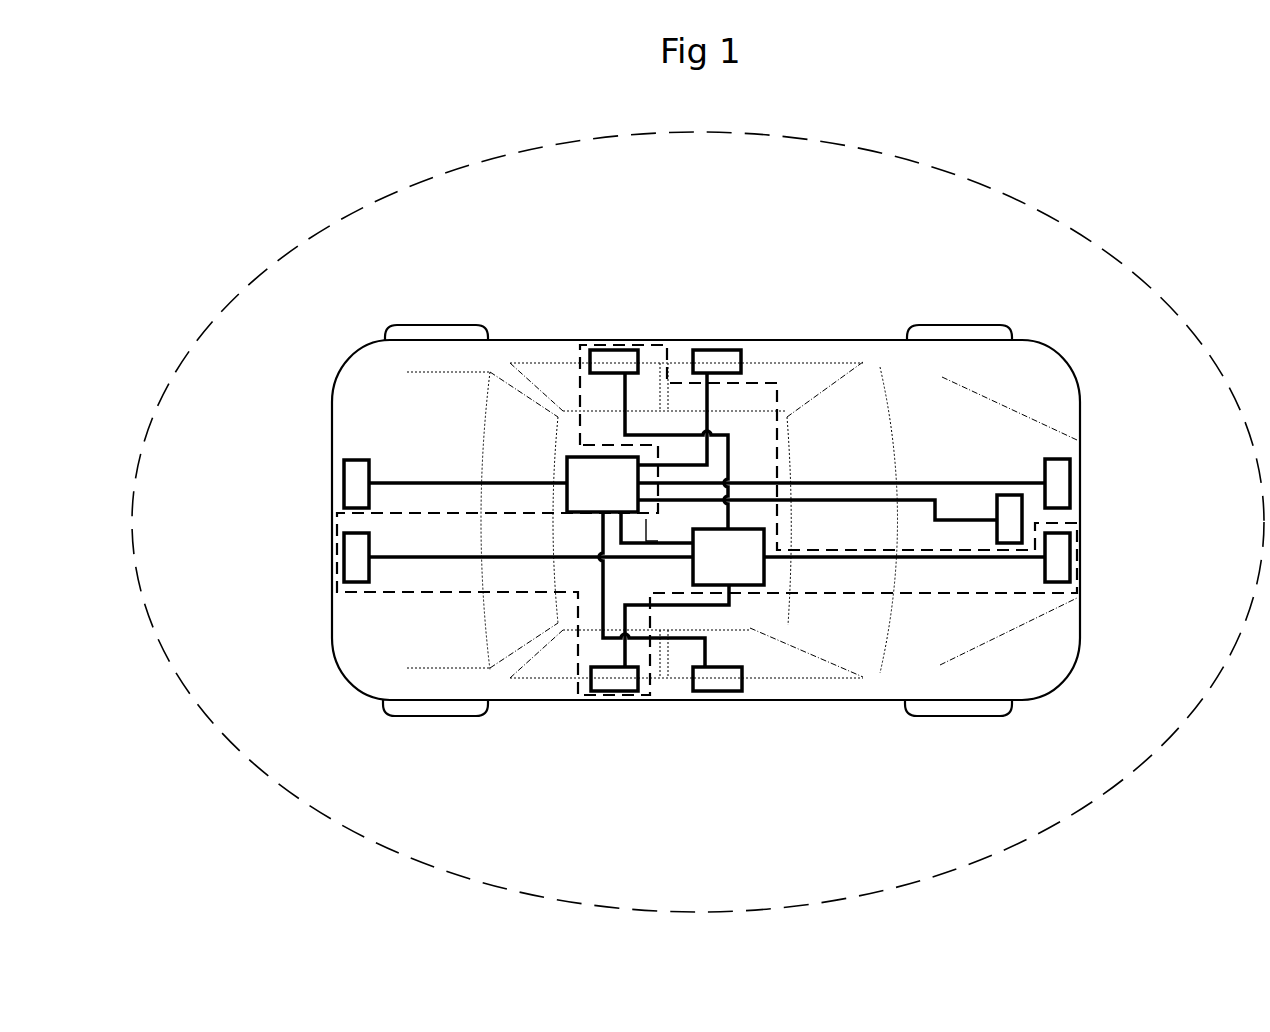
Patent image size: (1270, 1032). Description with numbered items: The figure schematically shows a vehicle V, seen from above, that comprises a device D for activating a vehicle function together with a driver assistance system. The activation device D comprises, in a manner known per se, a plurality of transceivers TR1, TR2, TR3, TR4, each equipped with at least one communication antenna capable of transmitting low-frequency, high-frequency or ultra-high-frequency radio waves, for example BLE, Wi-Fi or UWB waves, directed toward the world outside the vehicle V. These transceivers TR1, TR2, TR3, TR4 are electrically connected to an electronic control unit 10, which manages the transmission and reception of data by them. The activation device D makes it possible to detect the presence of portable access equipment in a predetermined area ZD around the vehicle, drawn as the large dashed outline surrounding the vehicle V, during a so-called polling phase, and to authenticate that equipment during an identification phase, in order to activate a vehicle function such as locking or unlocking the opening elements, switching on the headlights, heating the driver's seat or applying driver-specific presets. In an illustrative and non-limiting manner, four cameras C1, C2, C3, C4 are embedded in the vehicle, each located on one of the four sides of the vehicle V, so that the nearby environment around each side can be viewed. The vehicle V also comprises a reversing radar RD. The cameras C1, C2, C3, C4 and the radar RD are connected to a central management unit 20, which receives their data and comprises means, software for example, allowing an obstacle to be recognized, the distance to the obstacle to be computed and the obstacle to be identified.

The electronic control unit 10 is at (750, 570).
The central management unit 20 is at (597, 472).
The camera C1 is at (715, 683).
The camera C2 is at (714, 357).
The camera C3 is at (344, 483).
The camera C4 is at (1072, 483).
The transceiver TR1 is at (617, 683).
The transceiver TR2 is at (617, 357).
The transceiver TR3 is at (344, 557).
The transceiver TR4 is at (1072, 557).
The reversing radar RD is at (1010, 495).
The device for activating a vehicle function D is at (777, 381).
The vehicle V is at (1067, 372).
The predetermined area ZD is at (1097, 242).